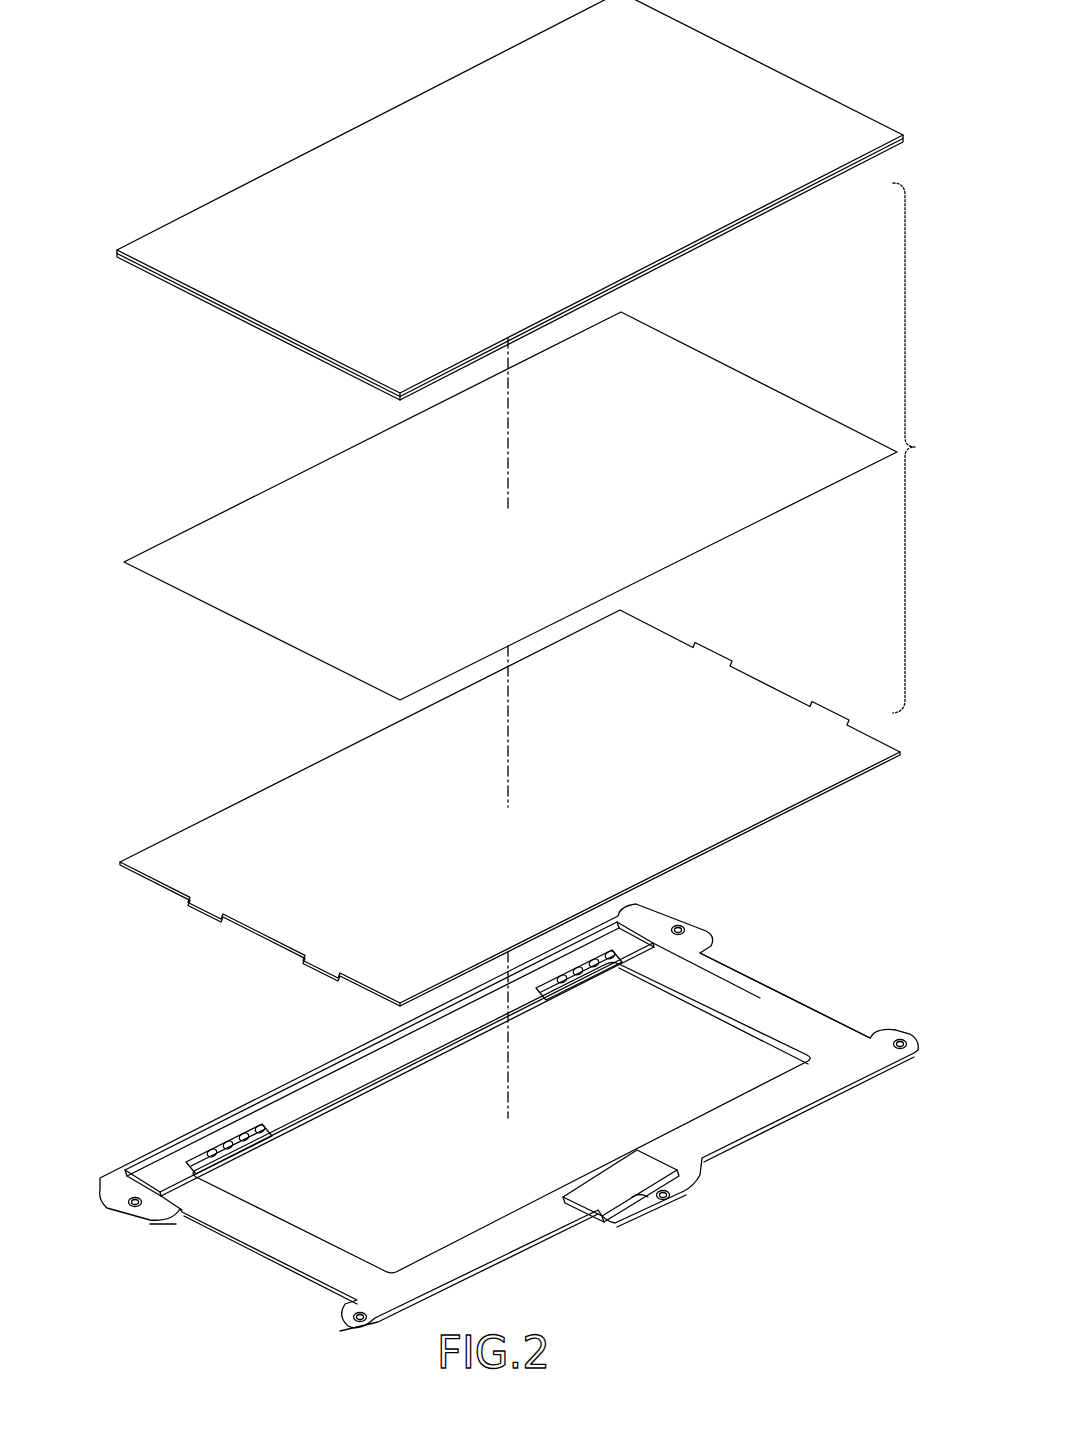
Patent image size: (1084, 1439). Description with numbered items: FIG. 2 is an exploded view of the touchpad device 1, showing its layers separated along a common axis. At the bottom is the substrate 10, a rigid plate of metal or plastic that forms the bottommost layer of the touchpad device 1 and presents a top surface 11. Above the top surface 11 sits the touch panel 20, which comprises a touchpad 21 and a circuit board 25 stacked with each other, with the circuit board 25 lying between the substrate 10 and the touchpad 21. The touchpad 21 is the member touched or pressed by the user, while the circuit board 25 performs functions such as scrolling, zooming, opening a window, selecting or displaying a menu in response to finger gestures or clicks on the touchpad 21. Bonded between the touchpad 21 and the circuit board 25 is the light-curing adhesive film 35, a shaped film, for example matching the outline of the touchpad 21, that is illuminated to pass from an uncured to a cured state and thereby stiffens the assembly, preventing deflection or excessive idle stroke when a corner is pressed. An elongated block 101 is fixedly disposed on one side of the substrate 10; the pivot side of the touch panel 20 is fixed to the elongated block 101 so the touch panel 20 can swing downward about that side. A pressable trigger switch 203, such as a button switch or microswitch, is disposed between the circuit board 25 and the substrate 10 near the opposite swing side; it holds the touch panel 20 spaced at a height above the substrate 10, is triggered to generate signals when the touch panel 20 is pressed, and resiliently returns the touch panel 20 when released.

The touchpad device 1 is at (110, 12).
The substrate 10 is at (852, 1038).
The top surface 11 is at (775, 1000).
The touch panel 20 is at (531, 503).
The touchpad 21 is at (884, 146).
The circuit board 25 is at (882, 748).
The light-curing adhesive film 35 is at (165, 553).
The elongated block 101 is at (163, 1152).
The pressable trigger switch 203 is at (605, 1172).